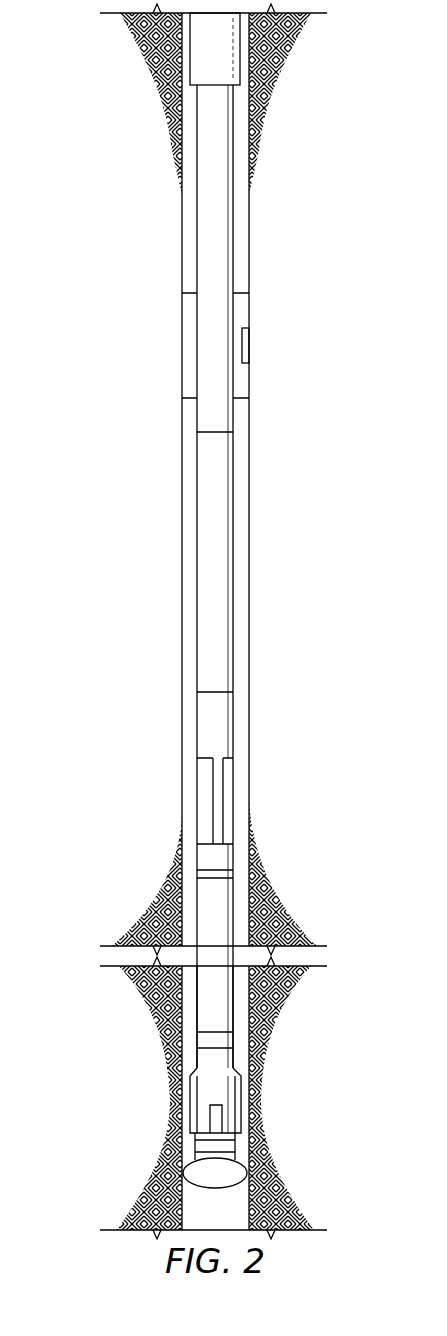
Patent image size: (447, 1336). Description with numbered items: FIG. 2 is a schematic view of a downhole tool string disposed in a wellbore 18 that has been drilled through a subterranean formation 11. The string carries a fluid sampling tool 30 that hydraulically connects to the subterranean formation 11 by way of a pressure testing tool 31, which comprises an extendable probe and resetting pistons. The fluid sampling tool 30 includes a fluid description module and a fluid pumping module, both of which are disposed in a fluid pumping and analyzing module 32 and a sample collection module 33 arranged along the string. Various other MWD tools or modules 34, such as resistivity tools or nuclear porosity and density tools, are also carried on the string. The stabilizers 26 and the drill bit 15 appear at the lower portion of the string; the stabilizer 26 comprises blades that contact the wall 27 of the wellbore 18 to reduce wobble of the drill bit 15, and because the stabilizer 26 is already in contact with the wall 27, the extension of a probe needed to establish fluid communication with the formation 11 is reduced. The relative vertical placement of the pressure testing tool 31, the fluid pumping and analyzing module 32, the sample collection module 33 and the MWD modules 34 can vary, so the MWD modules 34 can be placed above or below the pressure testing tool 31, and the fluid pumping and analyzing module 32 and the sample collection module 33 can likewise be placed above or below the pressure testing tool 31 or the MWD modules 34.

The subterranean formation 11 is at (302, 159).
The drill bit 15 is at (227, 1175).
The wellbore 18 is at (243, 197).
The stabilizer 26 is at (217, 1118).
The wall 27 is at (250, 244).
The fluid sampling tool 30 is at (132, 400).
The pressure testing tool 31 is at (137, 343).
The fluid pumping and analyzing module 32 is at (234, 552).
The sample collection module 33 is at (234, 795).
The MWD tools or modules 34 is at (218, 997).